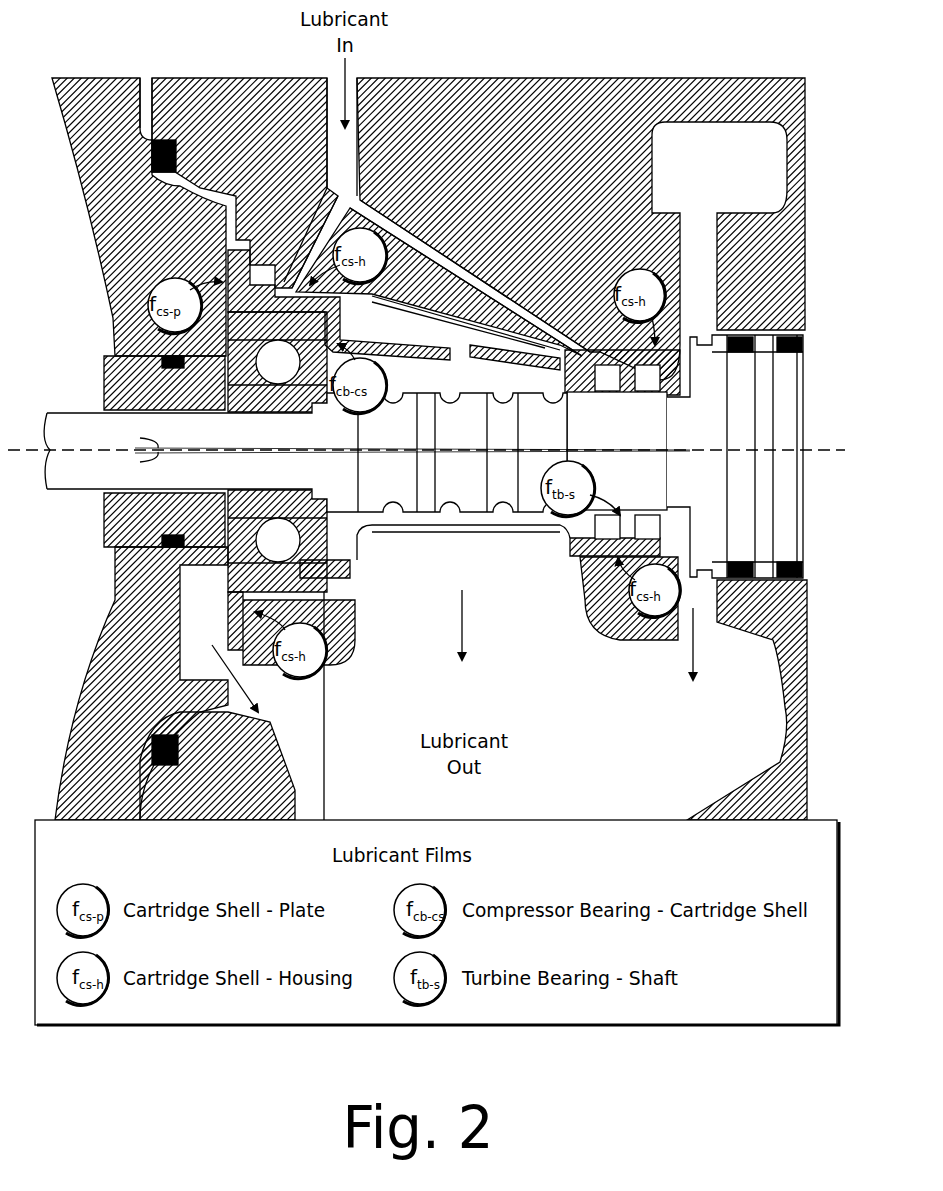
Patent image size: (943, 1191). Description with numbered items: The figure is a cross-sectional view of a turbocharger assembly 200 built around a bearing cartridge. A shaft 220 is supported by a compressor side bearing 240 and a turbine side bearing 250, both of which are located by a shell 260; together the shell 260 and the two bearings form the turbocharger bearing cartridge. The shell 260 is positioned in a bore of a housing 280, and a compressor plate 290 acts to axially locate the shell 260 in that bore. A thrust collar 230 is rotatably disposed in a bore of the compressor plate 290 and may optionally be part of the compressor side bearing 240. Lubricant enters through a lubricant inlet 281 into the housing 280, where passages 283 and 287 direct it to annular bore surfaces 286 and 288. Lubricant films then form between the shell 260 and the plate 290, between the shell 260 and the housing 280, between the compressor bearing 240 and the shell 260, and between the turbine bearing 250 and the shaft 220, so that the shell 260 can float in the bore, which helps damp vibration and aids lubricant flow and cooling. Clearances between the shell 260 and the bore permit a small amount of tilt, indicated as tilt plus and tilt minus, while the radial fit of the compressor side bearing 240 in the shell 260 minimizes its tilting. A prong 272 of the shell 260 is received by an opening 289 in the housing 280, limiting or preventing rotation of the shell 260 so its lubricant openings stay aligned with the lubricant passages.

The turbocharger assembly 200 is at (118, 38).
The shaft 220 is at (426, 456).
The thrust collar 230 is at (104, 378).
The compressor side bearing 240 is at (360, 542).
The turbine side bearing 250 is at (655, 392).
The shell 260 is at (430, 533).
The prong 272 is at (233, 258).
The housing 280 is at (471, 595).
The lubricant inlet 281 is at (357, 78).
The passage 283 is at (298, 140).
The annular bore surface 286 is at (352, 292).
The passage 287 is at (418, 180).
The annular bore surface 288 is at (580, 340).
The opening 289 is at (200, 65).
The compressor plate 290 is at (471, 595).